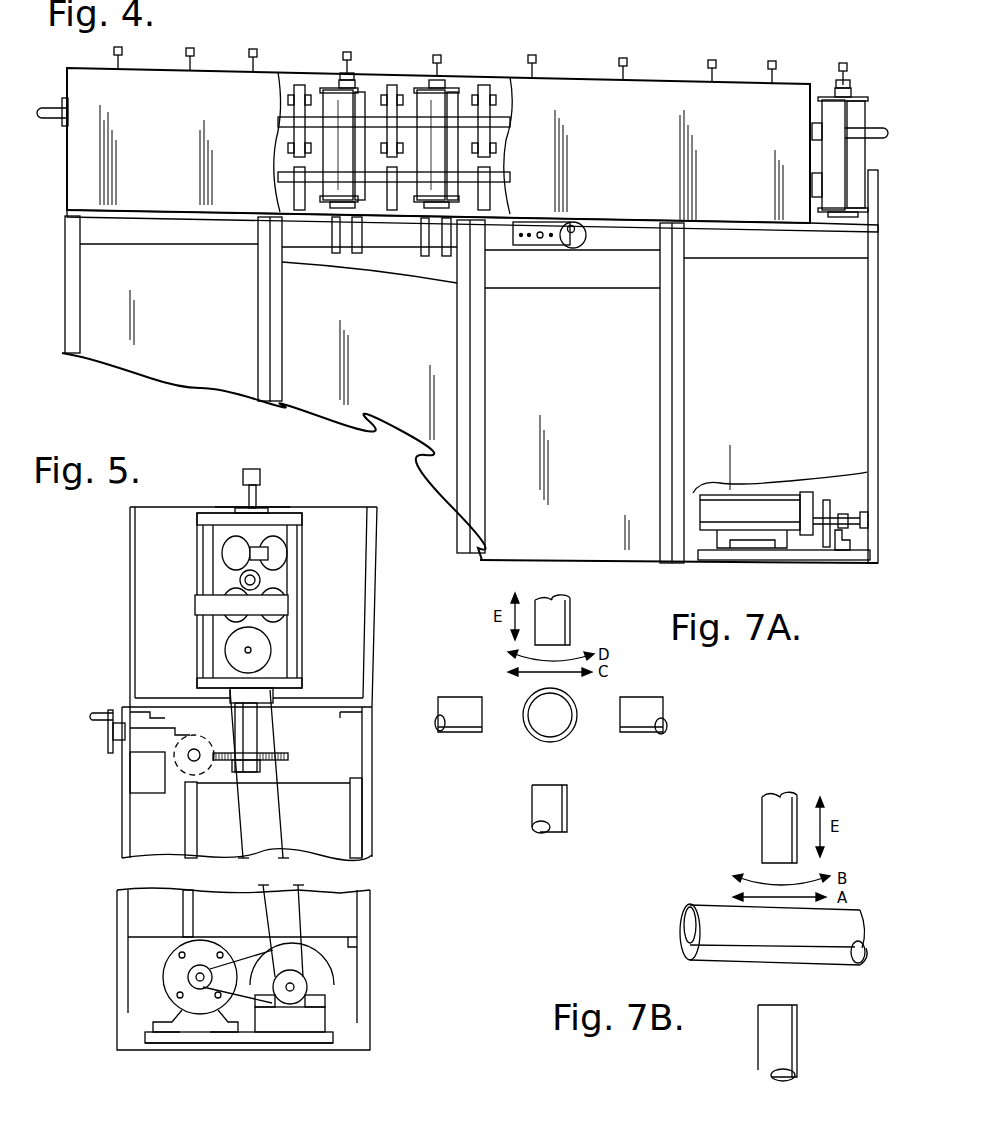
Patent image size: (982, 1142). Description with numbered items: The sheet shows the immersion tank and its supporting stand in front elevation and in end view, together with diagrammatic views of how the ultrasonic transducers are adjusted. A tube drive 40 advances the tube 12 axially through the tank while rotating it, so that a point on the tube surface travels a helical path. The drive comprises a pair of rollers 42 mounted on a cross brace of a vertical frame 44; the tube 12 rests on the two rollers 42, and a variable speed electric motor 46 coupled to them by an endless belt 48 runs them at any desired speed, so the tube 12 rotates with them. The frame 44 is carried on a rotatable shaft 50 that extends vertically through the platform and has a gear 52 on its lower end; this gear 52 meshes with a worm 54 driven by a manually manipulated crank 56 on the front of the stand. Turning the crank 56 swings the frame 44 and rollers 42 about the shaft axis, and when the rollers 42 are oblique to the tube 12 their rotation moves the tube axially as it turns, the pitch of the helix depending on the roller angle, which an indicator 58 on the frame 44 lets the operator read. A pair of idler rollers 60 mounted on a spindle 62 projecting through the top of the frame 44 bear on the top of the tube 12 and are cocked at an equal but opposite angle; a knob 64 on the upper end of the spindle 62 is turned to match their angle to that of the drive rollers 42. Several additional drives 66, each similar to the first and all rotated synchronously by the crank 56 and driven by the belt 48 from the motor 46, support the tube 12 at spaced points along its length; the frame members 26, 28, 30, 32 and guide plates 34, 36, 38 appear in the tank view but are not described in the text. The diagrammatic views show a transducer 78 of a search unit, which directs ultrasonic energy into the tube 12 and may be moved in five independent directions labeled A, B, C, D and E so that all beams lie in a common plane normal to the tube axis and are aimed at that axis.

In FIG. 4, the tube 12 is at (53, 120).
In FIG. 7A, the tube 12 is at (578, 712).
In FIG. 7B, the tube 12 is at (862, 966).
In FIG. 4, the frame member 26 is at (489, 6).
In FIG. 4, the frame member 28 is at (447, 6).
In FIG. 4, the frame 30 is at (716, 6).
In FIG. 4, the support 32 is at (629, 6).
In FIG. 4, the guide plate 34 is at (484, 85).
In FIG. 4, the guide plate 36 is at (393, 85).
In FIG. 4, the guide plate 38 is at (300, 85).
In FIG. 4, the tube drive 40 is at (842, 145).
In FIG. 5, the tube drive 40 is at (278, 503).
In FIG. 4, the rollers 42 is at (828, 162).
In FIG. 5, the rollers 42 is at (230, 621).
In FIG. 5, the vertical frame 44 is at (197, 542).
In FIG. 4, the variable speed electric motor 46 is at (762, 498).
In FIG. 5, the variable speed electric motor 46 is at (178, 940).
In FIG. 4, the endless belt 48 is at (832, 477).
In FIG. 5, the endless belt 48 is at (303, 921).
In FIG. 5, the rotatable shaft 50 is at (255, 772).
In FIG. 5, the gear 52 is at (285, 753).
In FIG. 4, the worm 54 is at (542, 6).
In FIG. 5, the worm 54 is at (205, 770).
In FIG. 4, the crank 56 is at (579, 226).
In FIG. 5, the crank 56 is at (108, 750).
In FIG. 4, the indicator 58 is at (876, 9).
In FIG. 5, the idler rollers 60 is at (228, 557).
In FIG. 4, the spindle 62 is at (355, 76).
In FIG. 5, the spindle 62 is at (249, 498).
In FIG. 4, the knob 64 is at (123, 49).
In FIG. 5, the knob 64 is at (258, 469).
In FIG. 4, the additional drives 66 is at (316, 151).
In FIG. 7A, the transducer 78 is at (566, 600).
In FIG. 7B, the transducer 78 is at (797, 793).